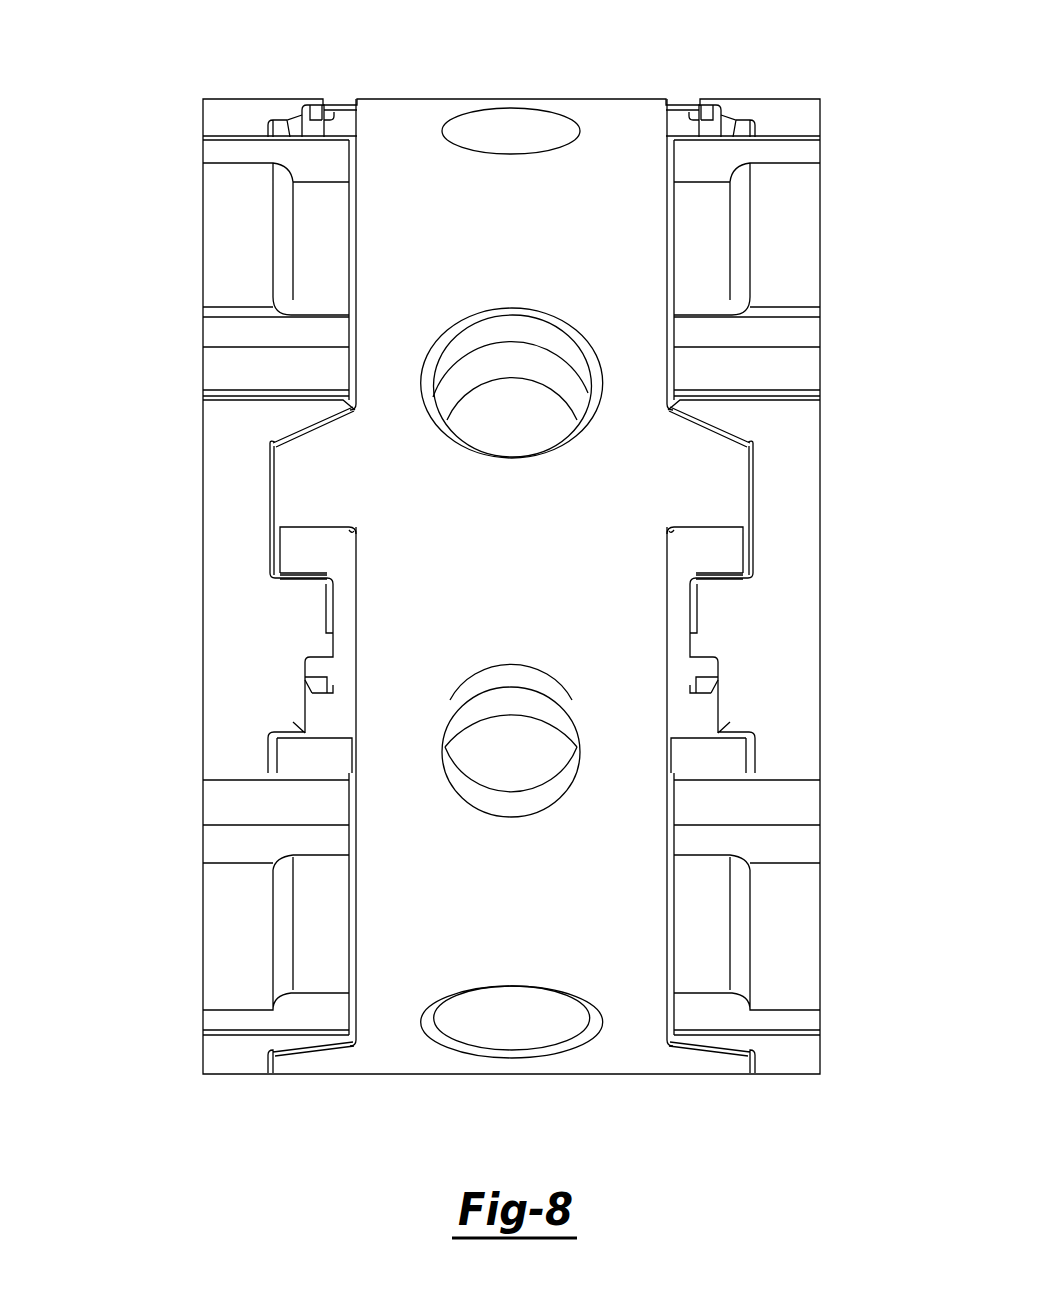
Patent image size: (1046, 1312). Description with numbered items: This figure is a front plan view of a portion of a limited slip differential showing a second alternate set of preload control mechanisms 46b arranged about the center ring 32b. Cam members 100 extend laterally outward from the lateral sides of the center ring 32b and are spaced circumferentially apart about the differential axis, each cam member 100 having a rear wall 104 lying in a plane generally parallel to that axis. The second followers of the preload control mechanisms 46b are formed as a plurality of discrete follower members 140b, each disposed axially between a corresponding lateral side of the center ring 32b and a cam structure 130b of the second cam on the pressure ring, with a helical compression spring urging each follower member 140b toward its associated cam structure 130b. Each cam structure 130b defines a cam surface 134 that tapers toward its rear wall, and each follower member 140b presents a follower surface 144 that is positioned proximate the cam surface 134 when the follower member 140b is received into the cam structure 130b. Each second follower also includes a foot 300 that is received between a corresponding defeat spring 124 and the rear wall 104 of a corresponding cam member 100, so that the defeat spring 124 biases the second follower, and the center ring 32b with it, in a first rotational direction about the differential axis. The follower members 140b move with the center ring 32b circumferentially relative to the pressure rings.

The center ring 32b is at (603, 133).
The cam member 100 is at (312, 460).
The rear wall 104 is at (307, 513).
The foot 300 is at (307, 553).
The defeat spring 124 is at (317, 592).
The preload control mechanism 46b is at (370, 576).
The follower member 140b is at (345, 616).
The cam structure 130b is at (220, 753).
The cam surface 134 is at (293, 720).
The follower surface 144 is at (320, 688).